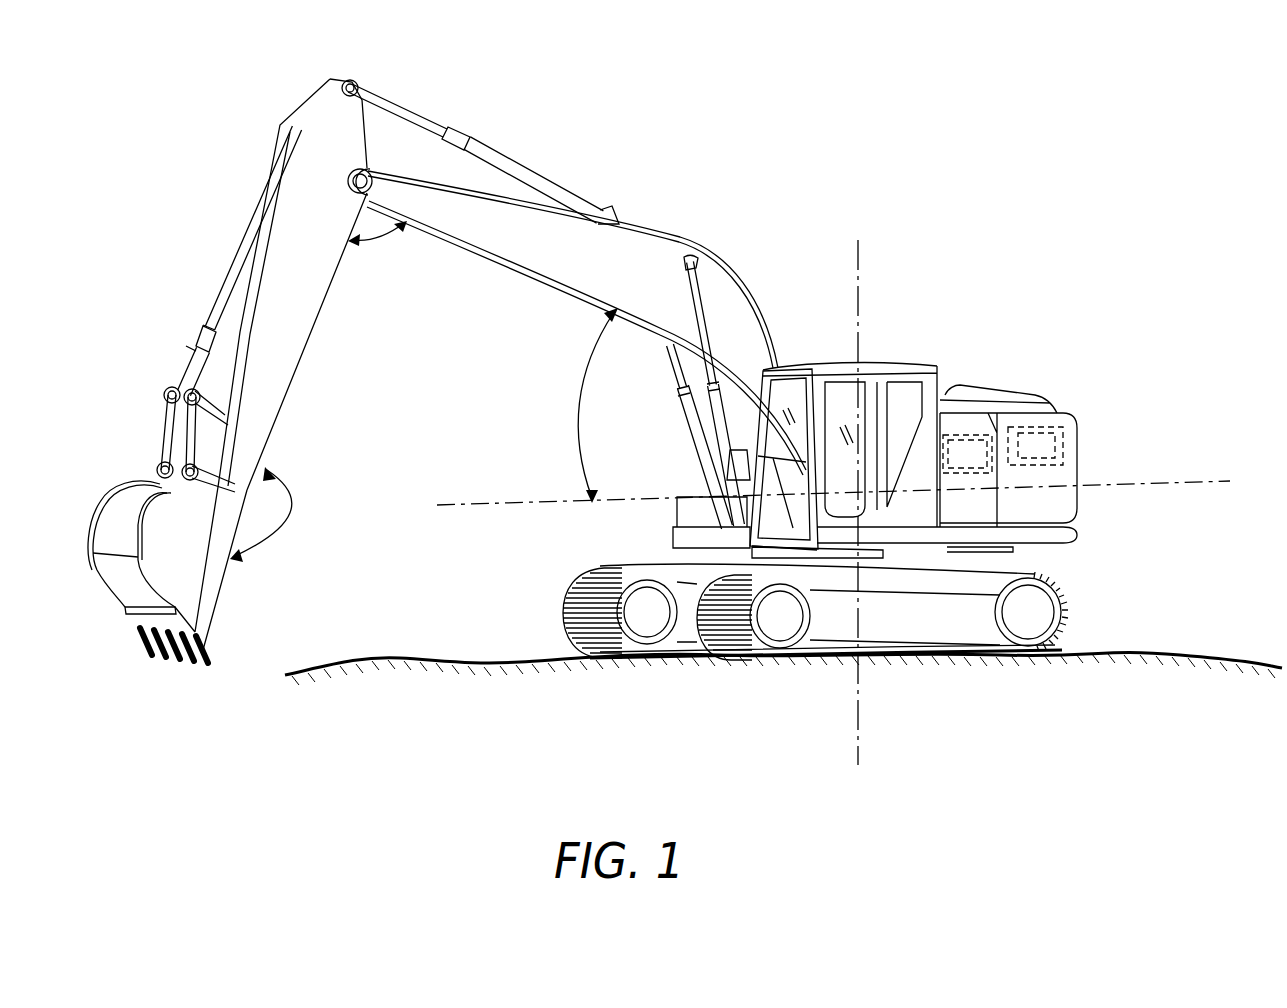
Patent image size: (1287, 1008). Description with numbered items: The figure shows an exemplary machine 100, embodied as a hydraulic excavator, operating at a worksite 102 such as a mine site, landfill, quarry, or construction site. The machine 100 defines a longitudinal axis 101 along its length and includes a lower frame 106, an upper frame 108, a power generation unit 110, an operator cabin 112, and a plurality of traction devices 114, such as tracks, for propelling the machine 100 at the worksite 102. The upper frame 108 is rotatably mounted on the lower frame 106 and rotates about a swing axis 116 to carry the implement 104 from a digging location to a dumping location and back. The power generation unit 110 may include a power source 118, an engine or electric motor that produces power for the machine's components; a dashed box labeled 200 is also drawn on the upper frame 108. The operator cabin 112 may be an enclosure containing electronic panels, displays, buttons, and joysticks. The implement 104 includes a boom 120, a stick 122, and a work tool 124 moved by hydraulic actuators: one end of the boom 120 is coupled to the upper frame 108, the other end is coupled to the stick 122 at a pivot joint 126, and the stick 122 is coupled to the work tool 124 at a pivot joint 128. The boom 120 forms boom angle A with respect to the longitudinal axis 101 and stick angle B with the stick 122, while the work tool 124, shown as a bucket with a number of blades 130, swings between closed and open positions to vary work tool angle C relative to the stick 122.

The machine 100 is at (1075, 112).
The longitudinal axis 101 is at (470, 505).
The worksite 102 is at (1192, 652).
The implement 104 is at (198, 293).
The lower frame 106 is at (935, 620).
The upper frame 108 is at (1090, 535).
The power generation unit 110 is at (1037, 427).
The operator cabin 112 is at (825, 362).
The traction devices 114 is at (615, 660).
The swing axis 116 is at (862, 257).
The power source 118 is at (1057, 443).
The boom 120 is at (662, 245).
The stick 122 is at (298, 212).
The work tool 124 is at (172, 662).
The pivot joint 126 is at (378, 170).
The pivot joint 128 is at (170, 465).
The blades 130 is at (160, 650).
The control system 200 is at (967, 454).